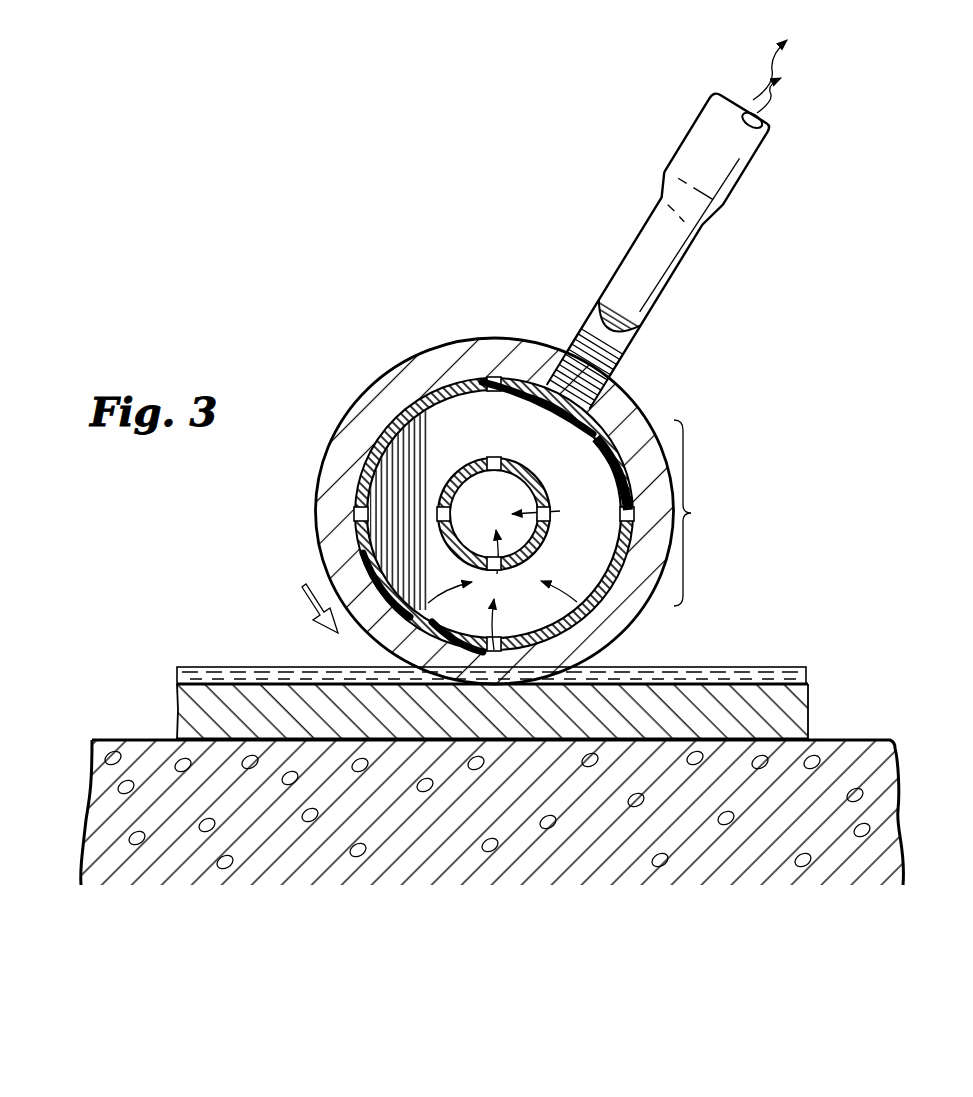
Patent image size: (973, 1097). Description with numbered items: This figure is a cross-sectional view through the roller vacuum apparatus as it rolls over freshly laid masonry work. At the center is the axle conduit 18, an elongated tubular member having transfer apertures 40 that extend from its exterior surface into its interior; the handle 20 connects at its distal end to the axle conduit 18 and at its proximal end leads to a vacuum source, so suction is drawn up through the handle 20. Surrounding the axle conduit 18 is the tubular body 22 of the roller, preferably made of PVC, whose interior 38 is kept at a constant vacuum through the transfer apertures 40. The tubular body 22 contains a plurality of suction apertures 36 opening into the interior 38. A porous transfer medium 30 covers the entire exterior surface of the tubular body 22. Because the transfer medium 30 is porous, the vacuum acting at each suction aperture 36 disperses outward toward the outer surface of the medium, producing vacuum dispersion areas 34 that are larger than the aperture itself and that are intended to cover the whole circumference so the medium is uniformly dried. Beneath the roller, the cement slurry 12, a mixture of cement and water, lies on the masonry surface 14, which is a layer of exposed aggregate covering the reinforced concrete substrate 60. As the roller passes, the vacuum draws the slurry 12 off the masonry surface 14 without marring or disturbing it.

The cement slurry 12 is at (793, 668).
The masonry surface 14 is at (796, 711).
The axle conduit 18 is at (548, 494).
The handle 20 is at (741, 159).
The tubular body 22 is at (440, 376).
The transfer medium 30 is at (633, 437).
The vacuum dispersion areas 34 is at (487, 357).
The suction apertures 36 is at (497, 391).
The interior 38 is at (436, 579).
The transfer aperture 40 is at (494, 459).
The reinforced concrete substrate 60 is at (882, 803).